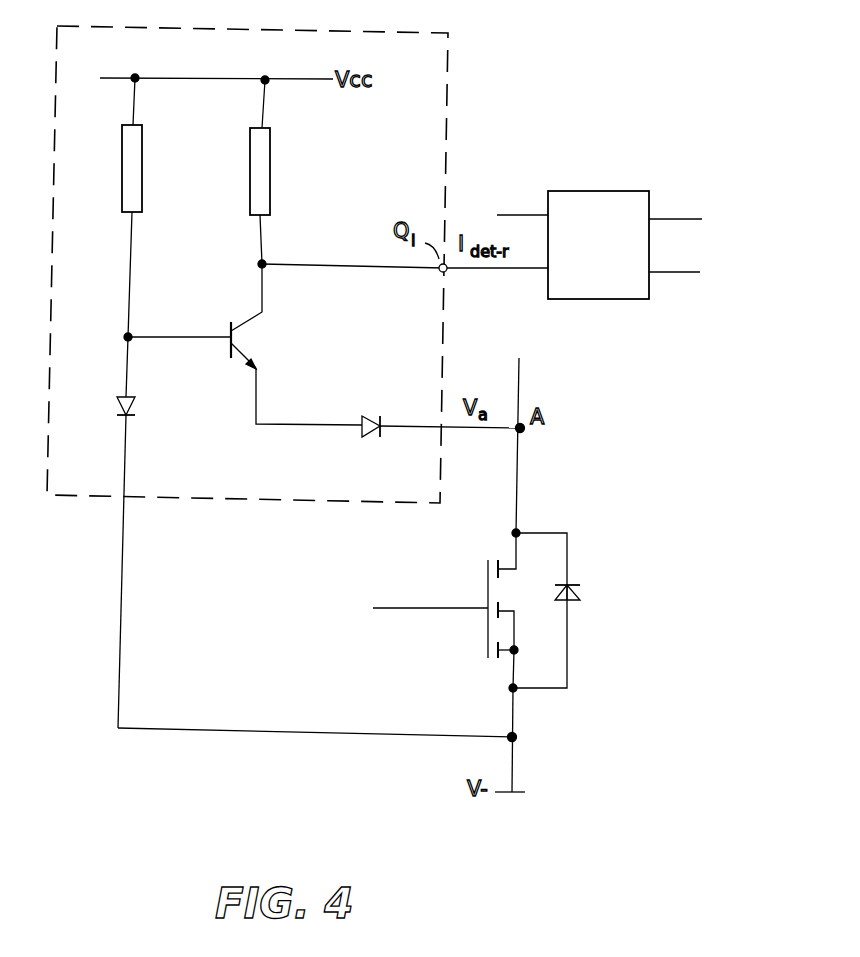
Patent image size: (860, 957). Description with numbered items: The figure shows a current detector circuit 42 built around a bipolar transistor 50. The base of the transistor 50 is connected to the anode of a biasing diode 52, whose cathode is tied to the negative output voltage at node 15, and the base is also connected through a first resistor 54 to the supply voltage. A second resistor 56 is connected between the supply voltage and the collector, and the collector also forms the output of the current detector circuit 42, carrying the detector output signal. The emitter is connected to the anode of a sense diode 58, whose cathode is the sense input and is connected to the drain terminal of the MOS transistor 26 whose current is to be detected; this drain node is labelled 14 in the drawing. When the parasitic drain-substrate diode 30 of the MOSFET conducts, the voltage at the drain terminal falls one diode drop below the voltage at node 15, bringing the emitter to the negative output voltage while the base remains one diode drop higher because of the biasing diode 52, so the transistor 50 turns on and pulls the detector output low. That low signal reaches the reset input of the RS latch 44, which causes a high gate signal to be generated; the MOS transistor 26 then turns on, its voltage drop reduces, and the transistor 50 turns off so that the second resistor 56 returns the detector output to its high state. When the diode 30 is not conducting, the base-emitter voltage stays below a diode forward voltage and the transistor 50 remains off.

The current detector circuit 42 is at (449, 88).
The RS latch 44 is at (612, 190).
The first resistor 54 is at (143, 153).
The second resistor 56 is at (271, 153).
The bipolar transistor 50 is at (228, 356).
The biasing diode 52 is at (136, 403).
The sense diode 58 is at (373, 416).
The node A 14 is at (523, 431).
The diode 30 is at (576, 598).
The MOS transistor 26 is at (488, 662).
The node 15 is at (516, 738).